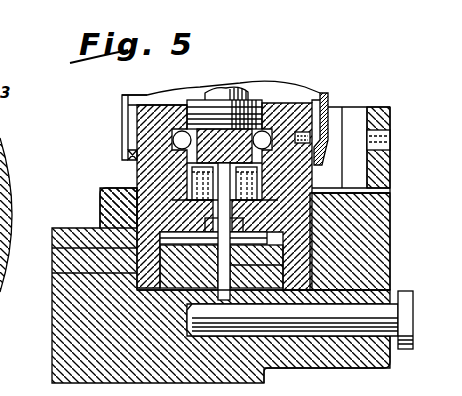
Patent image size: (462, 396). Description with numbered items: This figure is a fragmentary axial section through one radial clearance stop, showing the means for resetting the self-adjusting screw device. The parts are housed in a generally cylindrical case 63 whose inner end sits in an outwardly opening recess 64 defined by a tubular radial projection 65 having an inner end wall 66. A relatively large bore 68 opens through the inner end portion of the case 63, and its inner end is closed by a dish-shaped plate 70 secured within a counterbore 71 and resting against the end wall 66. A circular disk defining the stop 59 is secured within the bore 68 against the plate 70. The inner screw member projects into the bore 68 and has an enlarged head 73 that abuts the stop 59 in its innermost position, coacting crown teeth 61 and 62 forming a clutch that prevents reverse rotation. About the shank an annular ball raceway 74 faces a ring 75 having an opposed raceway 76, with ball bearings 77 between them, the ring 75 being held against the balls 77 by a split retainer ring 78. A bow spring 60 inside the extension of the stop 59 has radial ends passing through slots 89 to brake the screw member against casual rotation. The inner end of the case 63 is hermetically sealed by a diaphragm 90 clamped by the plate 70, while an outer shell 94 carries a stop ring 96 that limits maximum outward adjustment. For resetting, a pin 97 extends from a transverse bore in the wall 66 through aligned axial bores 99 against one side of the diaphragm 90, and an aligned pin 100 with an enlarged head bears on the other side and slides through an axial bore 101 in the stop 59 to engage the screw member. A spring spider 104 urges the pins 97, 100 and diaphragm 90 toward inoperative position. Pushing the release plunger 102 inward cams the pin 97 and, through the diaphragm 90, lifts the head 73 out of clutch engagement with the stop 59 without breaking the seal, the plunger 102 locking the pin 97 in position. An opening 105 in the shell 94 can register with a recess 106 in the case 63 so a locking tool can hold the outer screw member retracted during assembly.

The stop 59 is at (185, 222).
The spring 60 is at (195, 182).
The crown teeth 61 is at (100, 196).
The crown teeth 62 is at (102, 210).
The case 63 is at (140, 130).
The recess 64 is at (130, 266).
The tubular radial projection 65 is at (62, 340).
The inner end wall 66 is at (352, 356).
The bore 68 is at (292, 181).
The plate 70 is at (190, 246).
The counterbore 71 is at (130, 247).
The head 73 is at (0, 133).
The ball raceway 74 is at (160, 178).
The ring 75 is at (140, 125).
The raceway 76 is at (272, 115).
The ball bearings 77 is at (173, 143).
The split retainer ring 78 is at (175, 108).
The slots 89 is at (389, 196).
The diaphragm 90 is at (205, 245).
The shell 94 is at (323, 110).
The stop ring 96 is at (122, 153).
The pin 97 is at (389, 258).
The axial bores 99 is at (312, 298).
The pin 100 is at (231, 220).
The axial bore 101 is at (365, 250).
The release plunger 102 is at (311, 323).
The spring spider 104 is at (172, 258).
The opening 105 is at (308, 143).
The recess 106 is at (347, 140).